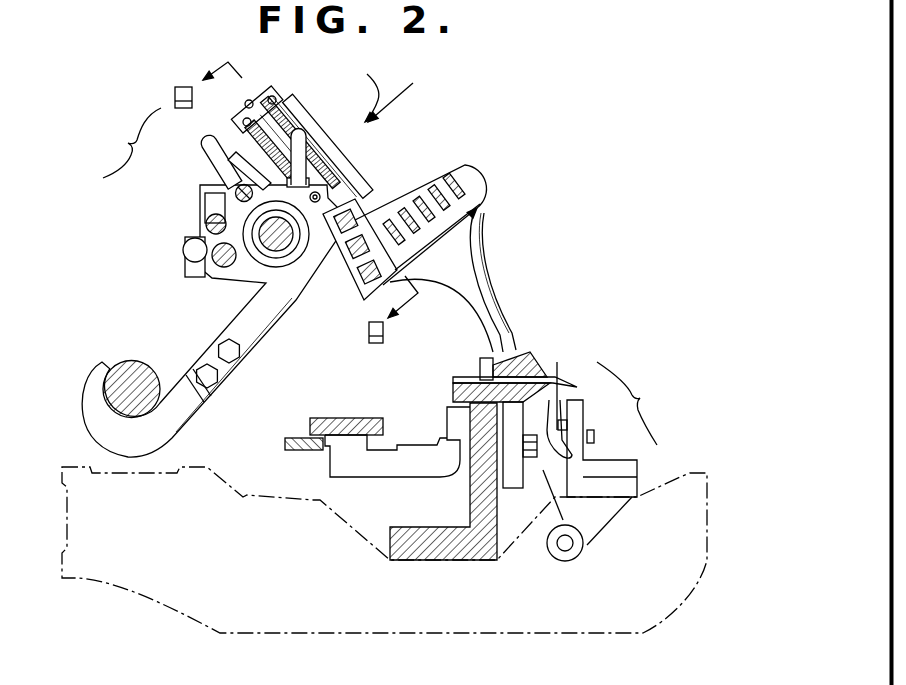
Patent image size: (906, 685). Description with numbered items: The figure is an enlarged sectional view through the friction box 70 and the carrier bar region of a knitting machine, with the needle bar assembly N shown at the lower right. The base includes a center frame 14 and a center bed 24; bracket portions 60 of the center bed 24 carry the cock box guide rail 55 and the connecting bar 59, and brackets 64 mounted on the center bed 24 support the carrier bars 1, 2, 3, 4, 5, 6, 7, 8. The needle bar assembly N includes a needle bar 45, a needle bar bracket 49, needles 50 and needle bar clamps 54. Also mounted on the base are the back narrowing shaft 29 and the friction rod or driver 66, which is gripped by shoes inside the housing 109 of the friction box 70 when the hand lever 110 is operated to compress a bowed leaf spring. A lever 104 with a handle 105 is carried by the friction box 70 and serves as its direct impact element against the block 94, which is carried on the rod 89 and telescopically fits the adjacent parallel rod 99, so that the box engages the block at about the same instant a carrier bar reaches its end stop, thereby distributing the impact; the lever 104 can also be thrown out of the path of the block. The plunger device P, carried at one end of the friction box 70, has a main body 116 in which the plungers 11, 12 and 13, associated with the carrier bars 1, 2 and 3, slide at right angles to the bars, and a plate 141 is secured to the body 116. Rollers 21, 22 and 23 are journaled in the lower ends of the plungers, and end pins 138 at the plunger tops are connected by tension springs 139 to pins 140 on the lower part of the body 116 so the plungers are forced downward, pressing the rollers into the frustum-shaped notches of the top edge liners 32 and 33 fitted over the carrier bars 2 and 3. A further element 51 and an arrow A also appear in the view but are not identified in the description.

The center frame 14 is at (200, 613).
The friction rod driving member 66 is at (274, 278).
The back narrowing shaft 29 is at (131, 361).
The lever 104 is at (205, 186).
The housing 109 is at (250, 284).
The block 94 is at (206, 226).
The rod 89 is at (205, 238).
The rod 99 is at (184, 252).
The hand lever 110 is at (202, 148).
The main body 116 is at (250, 163).
The plunger 11 is at (250, 138).
The plunger 12 is at (236, 95).
The plunger 13 is at (266, 92).
The end pins 138 is at (276, 104).
The tension springs 139 is at (297, 110).
The plate 141 is at (300, 124).
The handle 105 is at (312, 142).
The pins 140 is at (306, 181).
The slider block 51 is at (350, 268).
The roller 21 is at (340, 250).
The roller 22 is at (358, 236).
The roller 23 is at (370, 260).
The carrier bar 1 is at (362, 282).
The carrier bar 2 is at (366, 302).
The carrier bar 3 is at (428, 257).
The top edge liner 33 is at (445, 175).
The top edge liner 32 is at (410, 205).
The carrier bar 8 is at (466, 203).
The carrier bar 7 is at (463, 217).
The carrier bar 6 is at (440, 225).
The carrier bar 5 is at (435, 225).
The carrier bar 4 is at (403, 253).
The brackets 64 is at (503, 322).
The needles 50 is at (557, 368).
The center bed 24 is at (454, 553).
The bracket portions 60 is at (425, 473).
The cock box guide rail 55 is at (377, 420).
The connecting bar 59 is at (302, 450).
The needle bar 45 is at (608, 467).
The needle bar clamps 54 is at (553, 470).
The needle bar bracket 49 is at (586, 538).
The friction box 70 is at (128, 143).
The plunger device P is at (367, 88).
The direction A is at (399, 93).
The needle bar assembly N is at (631, 403).